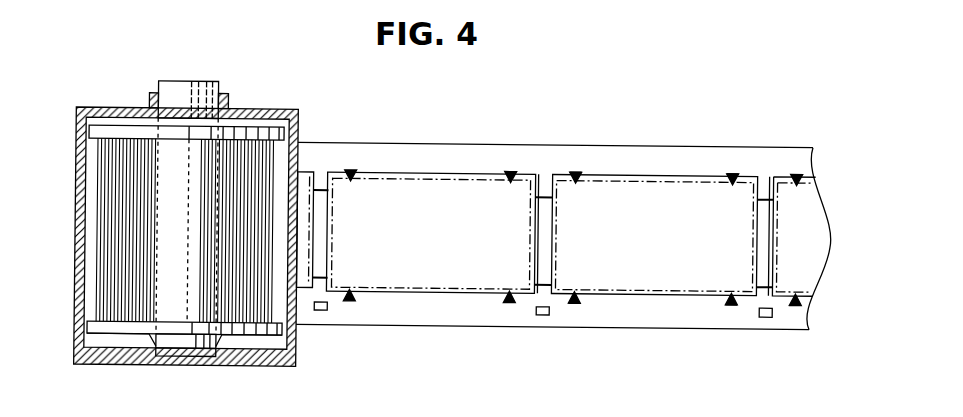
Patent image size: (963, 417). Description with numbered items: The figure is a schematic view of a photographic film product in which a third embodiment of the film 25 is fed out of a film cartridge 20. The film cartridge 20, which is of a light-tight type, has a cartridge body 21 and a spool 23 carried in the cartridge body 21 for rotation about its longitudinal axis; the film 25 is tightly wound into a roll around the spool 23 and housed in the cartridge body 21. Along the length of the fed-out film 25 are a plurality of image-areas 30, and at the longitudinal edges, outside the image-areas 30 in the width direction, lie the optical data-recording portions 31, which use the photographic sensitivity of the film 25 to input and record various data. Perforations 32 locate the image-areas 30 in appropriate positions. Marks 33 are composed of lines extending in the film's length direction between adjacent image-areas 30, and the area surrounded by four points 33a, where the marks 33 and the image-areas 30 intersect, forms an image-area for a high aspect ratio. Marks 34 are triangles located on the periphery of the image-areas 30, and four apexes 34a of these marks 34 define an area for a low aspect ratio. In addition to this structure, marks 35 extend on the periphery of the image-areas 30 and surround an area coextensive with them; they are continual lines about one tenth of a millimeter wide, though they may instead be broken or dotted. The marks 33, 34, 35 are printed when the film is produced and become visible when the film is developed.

The film cartridge 20 is at (102, 101).
The cartridge body 21 is at (77, 330).
The spool 23 is at (178, 100).
The film 25 is at (105, 245).
The image-areas 30 is at (444, 244).
The optical data-recording portions 31 is at (478, 149).
The perforations 32 is at (546, 310).
The marks 33 is at (543, 178).
The points 33a is at (553, 192).
The marks 34 is at (573, 167).
The apexes 34a is at (582, 173).
The marks 35 is at (436, 168).